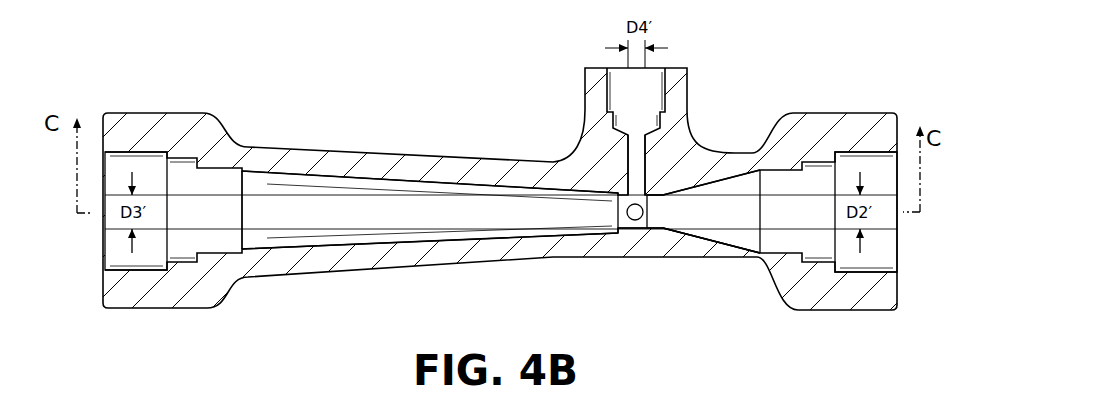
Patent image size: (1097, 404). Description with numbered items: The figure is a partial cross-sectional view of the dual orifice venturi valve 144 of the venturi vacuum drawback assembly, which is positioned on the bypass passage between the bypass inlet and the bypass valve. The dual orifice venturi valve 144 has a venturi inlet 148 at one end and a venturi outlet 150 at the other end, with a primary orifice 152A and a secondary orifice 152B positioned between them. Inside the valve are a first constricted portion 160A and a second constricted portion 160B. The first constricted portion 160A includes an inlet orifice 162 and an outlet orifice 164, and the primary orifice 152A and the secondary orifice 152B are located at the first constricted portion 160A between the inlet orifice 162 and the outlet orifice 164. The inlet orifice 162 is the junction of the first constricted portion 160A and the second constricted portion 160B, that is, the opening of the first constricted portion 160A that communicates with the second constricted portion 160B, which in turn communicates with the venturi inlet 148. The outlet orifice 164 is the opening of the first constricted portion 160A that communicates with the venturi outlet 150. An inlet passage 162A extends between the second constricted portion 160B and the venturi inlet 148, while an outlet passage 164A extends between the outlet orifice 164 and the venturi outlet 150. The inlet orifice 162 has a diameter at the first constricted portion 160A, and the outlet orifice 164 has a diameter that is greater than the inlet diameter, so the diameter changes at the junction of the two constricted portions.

The dual orifice venturi valve 144 is at (403, 120).
The venturi inlet 148 is at (898, 265).
The venturi outlet 150 is at (102, 265).
The primary orifice 152A is at (628, 232).
The secondary orifice 152B is at (648, 185).
The first constricted portion 160A is at (637, 228).
The second constricted portion 160B is at (652, 230).
The inlet orifice 162 is at (670, 222).
The inlet passage 162A is at (740, 235).
The outlet orifice 164 is at (612, 216).
The outlet passage 164A is at (350, 245).